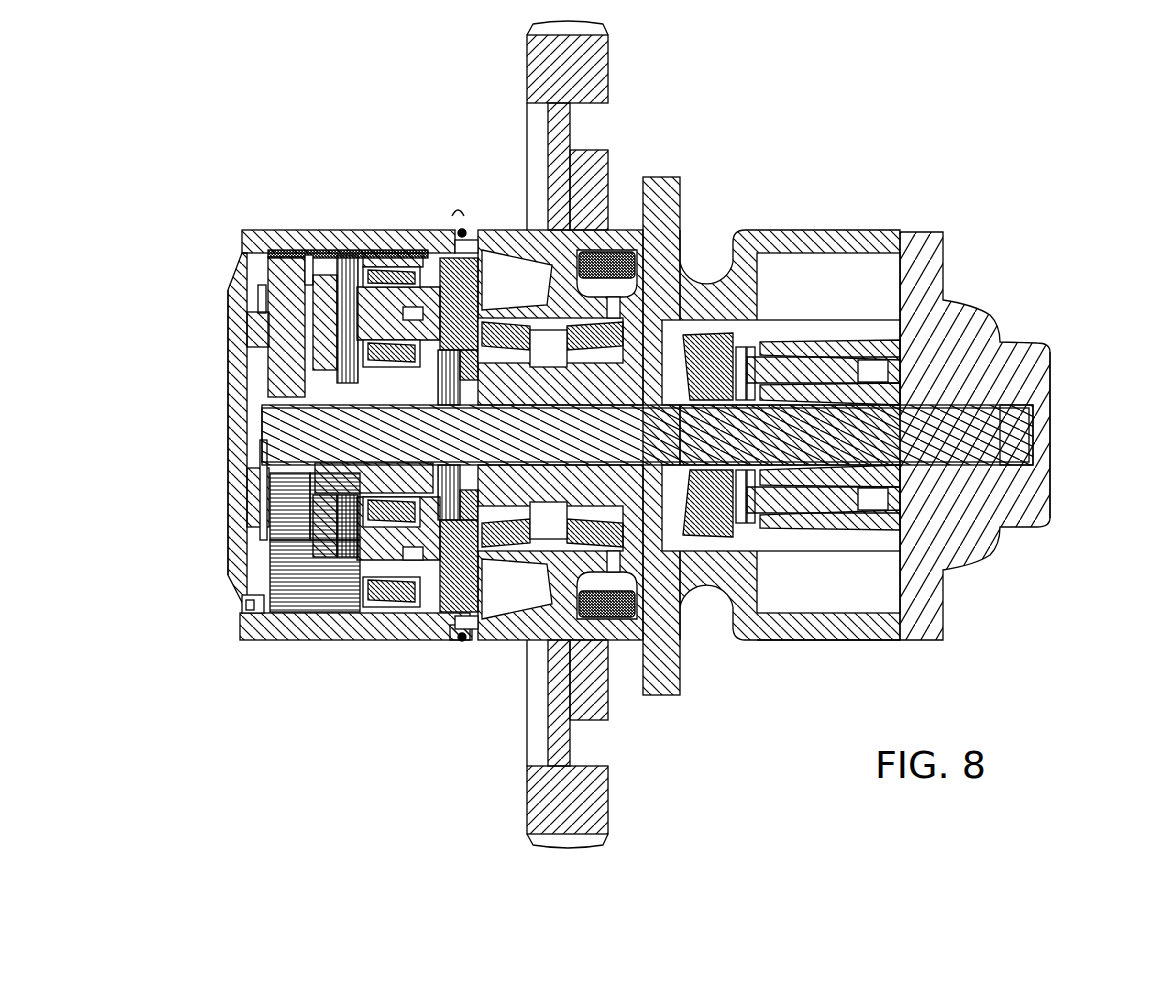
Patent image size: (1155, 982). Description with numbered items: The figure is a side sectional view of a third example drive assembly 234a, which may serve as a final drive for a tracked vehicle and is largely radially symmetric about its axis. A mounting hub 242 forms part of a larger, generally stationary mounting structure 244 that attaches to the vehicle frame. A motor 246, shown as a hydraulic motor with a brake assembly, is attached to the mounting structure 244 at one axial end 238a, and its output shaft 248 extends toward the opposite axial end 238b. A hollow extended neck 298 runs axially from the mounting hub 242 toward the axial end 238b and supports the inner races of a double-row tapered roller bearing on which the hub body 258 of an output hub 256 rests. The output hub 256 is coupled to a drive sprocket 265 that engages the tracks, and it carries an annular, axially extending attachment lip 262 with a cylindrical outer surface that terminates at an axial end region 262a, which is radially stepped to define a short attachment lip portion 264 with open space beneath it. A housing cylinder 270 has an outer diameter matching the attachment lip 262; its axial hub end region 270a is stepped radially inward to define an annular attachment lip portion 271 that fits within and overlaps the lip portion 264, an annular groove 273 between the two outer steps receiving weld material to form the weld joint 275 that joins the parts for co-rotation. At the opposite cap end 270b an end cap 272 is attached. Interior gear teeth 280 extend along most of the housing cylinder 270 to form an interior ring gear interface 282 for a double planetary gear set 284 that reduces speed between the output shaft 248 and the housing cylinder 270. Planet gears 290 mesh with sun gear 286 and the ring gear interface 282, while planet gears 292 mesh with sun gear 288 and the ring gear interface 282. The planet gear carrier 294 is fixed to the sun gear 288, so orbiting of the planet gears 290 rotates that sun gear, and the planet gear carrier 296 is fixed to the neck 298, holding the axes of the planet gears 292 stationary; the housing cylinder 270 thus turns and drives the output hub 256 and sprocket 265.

The drive assembly 234a is at (1066, 676).
The axial end 238a is at (1062, 420).
The axial end 238b is at (212, 372).
The mounting hub 242 is at (681, 200).
The mounting structure 244 is at (778, 642).
The motor 246 is at (1050, 500).
The output shaft 248 is at (1033, 442).
The output hub 256 is at (612, 165).
The hub body 258 is at (568, 240).
The attachment lip 262 is at (495, 230).
The axial end region 262a is at (468, 232).
The attachment lip portion 264 is at (470, 262).
The drive sprocket 265 is at (610, 72).
The housing cylinder 270 is at (323, 650).
The axial hub end region 270a is at (450, 642).
The cap end 270b is at (245, 640).
The annular attachment lip portion 271 is at (462, 229).
The end cap 272 is at (228, 505).
The annular groove 273 is at (463, 641).
The weld joint 275 is at (455, 198).
The interior gear teeth 280 is at (268, 590).
The interior ring gear interface 282 is at (300, 242).
The double planetary gear set 284 is at (258, 563).
The sun gear 286 is at (263, 395).
The sun gear 288 is at (450, 398).
The planet gears 290 is at (262, 583).
The planet gears 292 is at (352, 400).
The planet gear carrier 294 is at (262, 300).
The planet gear carrier 296 is at (470, 600).
The extended neck 298 is at (580, 408).